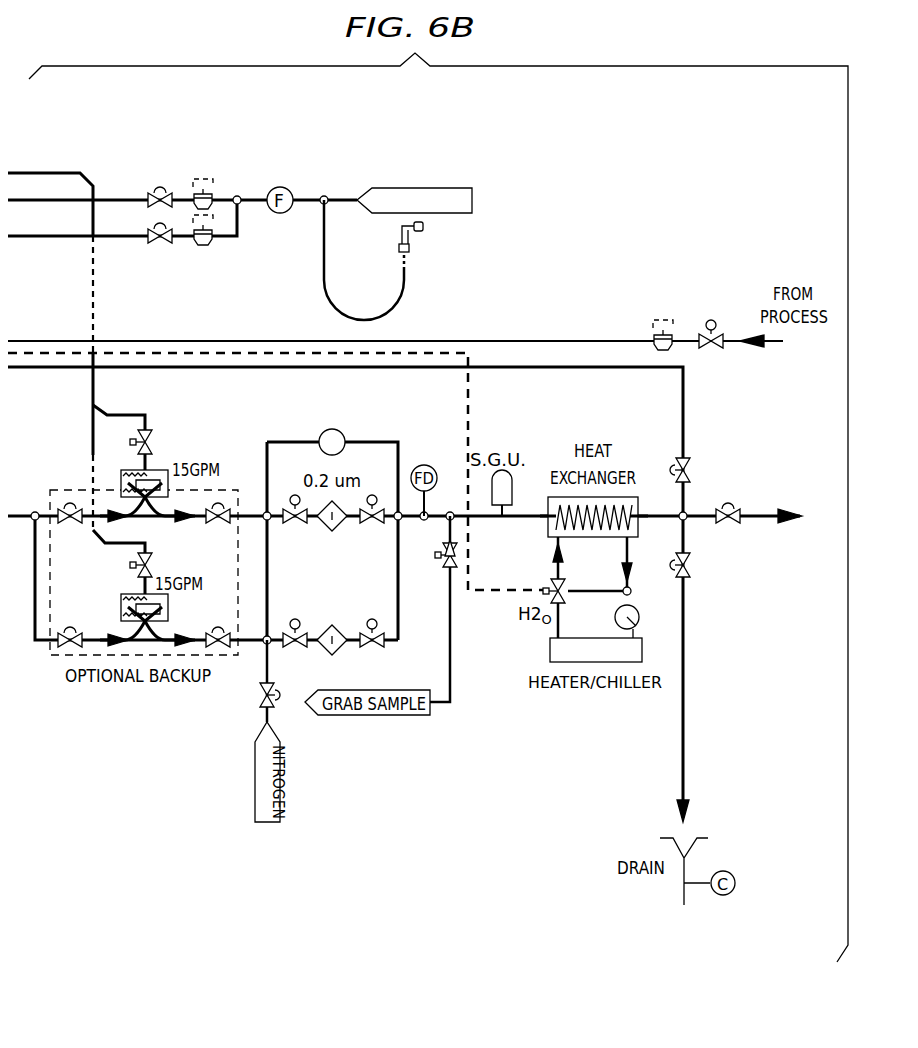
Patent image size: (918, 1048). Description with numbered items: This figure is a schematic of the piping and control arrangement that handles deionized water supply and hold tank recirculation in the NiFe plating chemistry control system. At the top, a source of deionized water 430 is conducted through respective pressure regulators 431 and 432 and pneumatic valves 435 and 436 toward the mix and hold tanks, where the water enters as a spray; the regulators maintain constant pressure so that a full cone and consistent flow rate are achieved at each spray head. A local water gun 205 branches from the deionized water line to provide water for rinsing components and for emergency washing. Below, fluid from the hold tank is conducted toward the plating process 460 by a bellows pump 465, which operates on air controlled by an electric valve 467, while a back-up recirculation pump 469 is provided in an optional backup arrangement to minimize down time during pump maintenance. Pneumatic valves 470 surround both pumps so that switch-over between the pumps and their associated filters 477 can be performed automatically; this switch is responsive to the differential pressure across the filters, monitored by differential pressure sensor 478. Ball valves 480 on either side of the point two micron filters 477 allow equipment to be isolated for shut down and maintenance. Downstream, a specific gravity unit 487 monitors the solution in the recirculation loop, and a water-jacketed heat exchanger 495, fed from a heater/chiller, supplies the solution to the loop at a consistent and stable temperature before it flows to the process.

The local water gun 205 is at (397, 233).
The source of deionized water 430 is at (428, 188).
The pressure regulator 431 is at (207, 188).
The pressure regulator 432 is at (208, 248).
The pneumatic valve 435 is at (160, 190).
The pneumatic valve 436 is at (165, 245).
The plating process 460 is at (762, 521).
The bellows pump 465 is at (160, 470).
The electric valve 467 is at (155, 437).
The back-up recirculation pump 469 is at (135, 594).
The pneumatic valves 470 is at (70, 505).
The filters 477 is at (342, 531).
The differential pressure sensor 478 is at (338, 429).
The ball valves 480 is at (297, 530).
The specific gravity unit 487 is at (515, 490).
The heat exchanger 495 is at (578, 540).